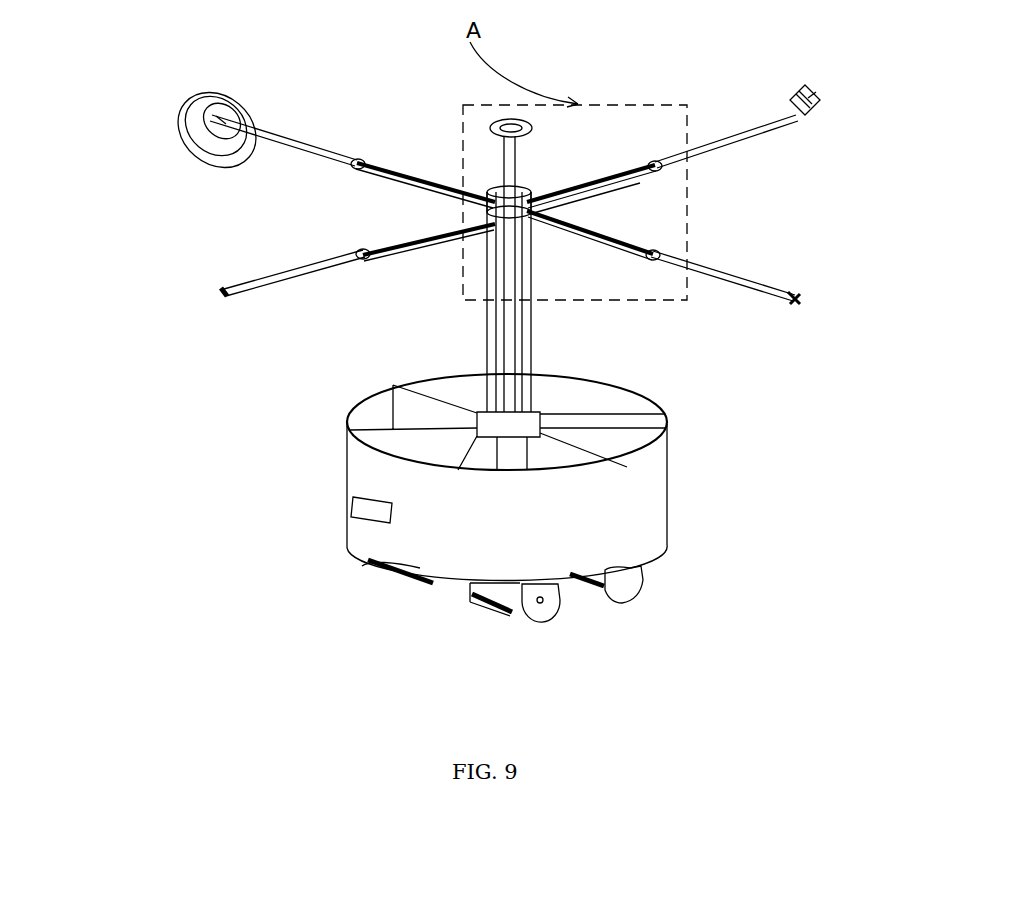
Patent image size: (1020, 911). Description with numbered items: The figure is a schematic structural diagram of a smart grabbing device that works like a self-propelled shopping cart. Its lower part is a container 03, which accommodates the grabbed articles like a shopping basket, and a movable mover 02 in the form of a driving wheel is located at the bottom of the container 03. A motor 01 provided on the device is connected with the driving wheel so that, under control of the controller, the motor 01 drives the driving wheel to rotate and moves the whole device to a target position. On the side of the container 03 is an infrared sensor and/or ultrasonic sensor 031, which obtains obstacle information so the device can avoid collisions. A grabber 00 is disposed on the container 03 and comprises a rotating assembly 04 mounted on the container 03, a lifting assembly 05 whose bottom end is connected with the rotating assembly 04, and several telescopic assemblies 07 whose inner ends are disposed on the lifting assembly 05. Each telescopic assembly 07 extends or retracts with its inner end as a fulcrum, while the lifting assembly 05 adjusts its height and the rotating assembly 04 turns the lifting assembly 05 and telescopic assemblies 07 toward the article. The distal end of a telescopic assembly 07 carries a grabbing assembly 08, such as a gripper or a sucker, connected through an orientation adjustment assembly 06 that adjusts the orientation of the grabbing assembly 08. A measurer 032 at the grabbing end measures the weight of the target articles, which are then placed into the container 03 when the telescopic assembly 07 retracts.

The grabber 00 is at (488, 316).
The motor 01 is at (495, 603).
The mover 02 is at (545, 608).
The container 03 is at (622, 440).
The infrared sensor and/or ultrasonic sensor 031 is at (368, 517).
The measurer 032 is at (810, 106).
The rotating assembly 04 is at (650, 428).
The lifting assembly 05 is at (532, 322).
The orientation adjustment assembly 06 is at (800, 298).
The telescopic assembly 07 is at (535, 243).
The grabbing assembly 08 is at (223, 122).